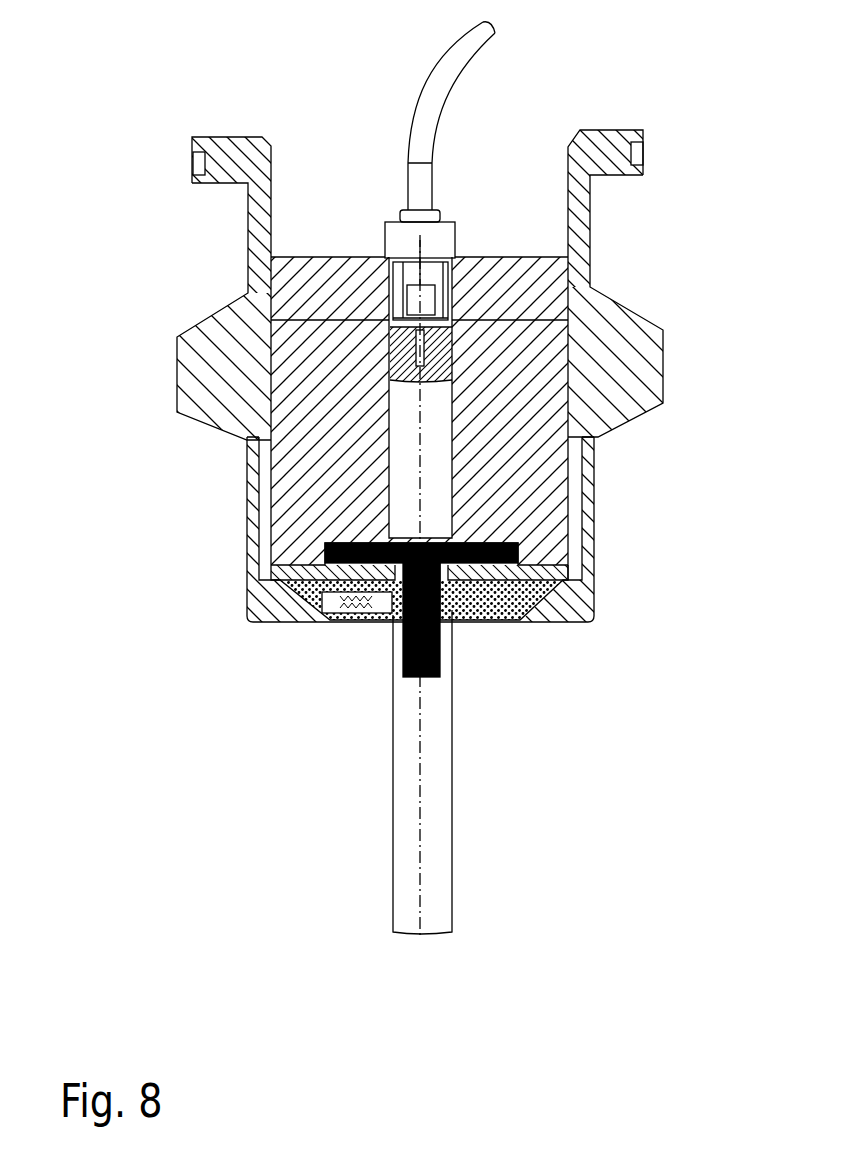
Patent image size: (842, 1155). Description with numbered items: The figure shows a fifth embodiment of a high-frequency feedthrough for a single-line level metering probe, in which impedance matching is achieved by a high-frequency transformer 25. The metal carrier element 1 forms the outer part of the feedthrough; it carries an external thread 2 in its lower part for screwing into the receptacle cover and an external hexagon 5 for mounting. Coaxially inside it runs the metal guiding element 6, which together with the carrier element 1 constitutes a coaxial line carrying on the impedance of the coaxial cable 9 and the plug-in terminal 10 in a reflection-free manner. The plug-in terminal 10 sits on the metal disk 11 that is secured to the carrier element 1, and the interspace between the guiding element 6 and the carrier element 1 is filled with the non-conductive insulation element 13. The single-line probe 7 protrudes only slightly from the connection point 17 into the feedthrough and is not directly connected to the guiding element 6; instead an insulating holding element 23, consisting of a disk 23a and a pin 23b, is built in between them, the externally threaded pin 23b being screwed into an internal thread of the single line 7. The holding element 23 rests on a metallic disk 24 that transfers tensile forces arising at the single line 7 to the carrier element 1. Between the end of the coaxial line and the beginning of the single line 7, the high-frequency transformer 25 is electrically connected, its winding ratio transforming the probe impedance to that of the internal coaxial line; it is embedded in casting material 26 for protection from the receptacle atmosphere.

The carrier element 1 is at (237, 330).
The external thread 2 is at (247, 492).
The external hexagon 5 is at (177, 370).
The guiding element 6 is at (453, 457).
The single-line probe 7 is at (437, 850).
The coaxial cable 9 is at (422, 93).
The plug-in terminal 10 is at (383, 220).
The metal disk 11 is at (290, 270).
The insulation element 13 is at (307, 518).
The connection point 17 is at (447, 622).
The insulating holding element 23 is at (518, 555).
The disk 23a is at (595, 600).
The pin 23b is at (445, 677).
The metallic disk 24 is at (292, 582).
The high-frequency transformer 25 is at (340, 620).
The casting material 26 is at (567, 620).